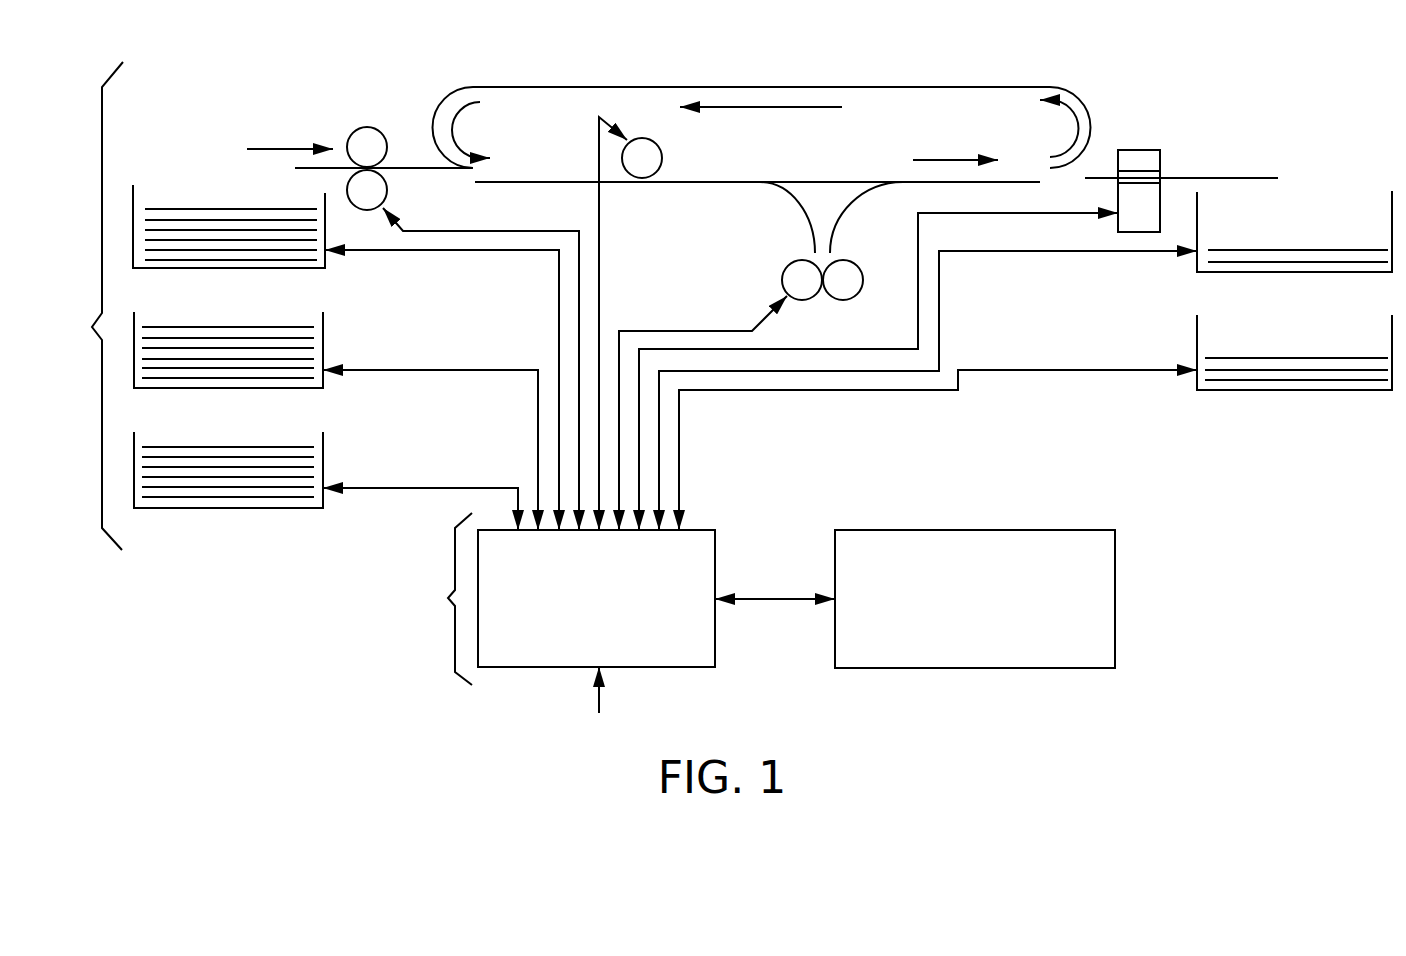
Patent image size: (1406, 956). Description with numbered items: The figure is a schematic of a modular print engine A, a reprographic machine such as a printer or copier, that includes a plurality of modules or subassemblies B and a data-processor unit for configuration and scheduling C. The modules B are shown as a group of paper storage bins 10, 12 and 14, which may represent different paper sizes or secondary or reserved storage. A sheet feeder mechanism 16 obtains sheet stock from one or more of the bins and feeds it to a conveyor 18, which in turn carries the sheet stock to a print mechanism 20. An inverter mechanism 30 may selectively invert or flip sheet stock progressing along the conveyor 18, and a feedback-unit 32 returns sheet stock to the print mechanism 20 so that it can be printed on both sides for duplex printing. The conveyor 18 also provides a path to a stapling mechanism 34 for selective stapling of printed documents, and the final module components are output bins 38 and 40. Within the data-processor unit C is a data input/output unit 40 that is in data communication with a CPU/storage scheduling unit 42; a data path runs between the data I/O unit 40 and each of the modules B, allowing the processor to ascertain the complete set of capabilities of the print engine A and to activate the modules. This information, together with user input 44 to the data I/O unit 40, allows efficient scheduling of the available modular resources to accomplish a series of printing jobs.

The modular print engine A is at (290, 67).
The modules B is at (95, 306).
The data-processor unit for configuration and scheduling C is at (448, 599).
The paper storage bin 10 is at (325, 258).
The paper storage bin 12 is at (323, 380).
The paper storage bin 14 is at (323, 500).
The sheet feeder mechanism 16 is at (372, 127).
The conveyor 18 is at (550, 182).
The print mechanism 20 is at (662, 152).
The inverter mechanism 30 is at (838, 172).
The feedback-unit 32 is at (920, 87).
The stapling mechanism 34 is at (1158, 150).
The output bin 38 is at (1218, 273).
The data input/output unit 40 is at (1220, 392).
The CPU/storage scheduling unit 42 is at (907, 668).
The user input 44 is at (598, 704).